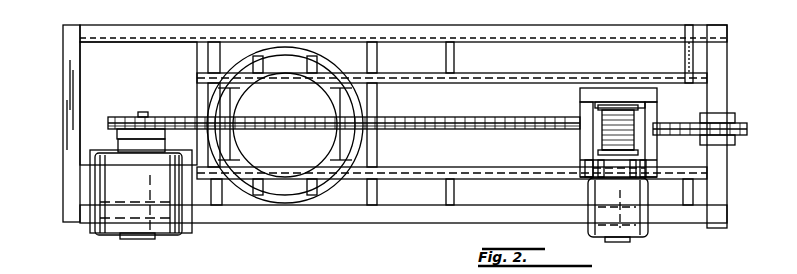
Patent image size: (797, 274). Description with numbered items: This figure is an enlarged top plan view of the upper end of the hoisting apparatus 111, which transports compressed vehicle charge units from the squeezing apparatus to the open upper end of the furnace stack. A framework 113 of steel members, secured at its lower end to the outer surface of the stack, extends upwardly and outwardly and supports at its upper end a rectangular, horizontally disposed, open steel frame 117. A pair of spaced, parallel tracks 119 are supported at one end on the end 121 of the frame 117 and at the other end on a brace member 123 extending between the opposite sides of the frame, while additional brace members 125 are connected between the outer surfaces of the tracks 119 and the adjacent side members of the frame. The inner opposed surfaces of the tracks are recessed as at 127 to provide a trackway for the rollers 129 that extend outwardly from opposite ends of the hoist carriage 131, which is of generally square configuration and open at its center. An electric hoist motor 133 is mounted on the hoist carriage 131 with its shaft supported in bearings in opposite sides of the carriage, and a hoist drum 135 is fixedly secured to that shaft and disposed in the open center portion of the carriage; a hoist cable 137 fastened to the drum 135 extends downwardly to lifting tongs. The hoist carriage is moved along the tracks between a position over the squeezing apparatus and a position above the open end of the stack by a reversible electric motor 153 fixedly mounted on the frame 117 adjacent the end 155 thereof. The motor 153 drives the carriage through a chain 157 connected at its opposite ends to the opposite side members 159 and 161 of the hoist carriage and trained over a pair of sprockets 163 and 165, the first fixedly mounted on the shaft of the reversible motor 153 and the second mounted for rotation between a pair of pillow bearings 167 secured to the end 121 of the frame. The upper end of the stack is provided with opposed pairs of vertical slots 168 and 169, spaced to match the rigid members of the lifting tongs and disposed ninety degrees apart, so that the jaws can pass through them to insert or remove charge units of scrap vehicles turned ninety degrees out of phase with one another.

The hoisting apparatus 111 is at (116, 230).
The framework 113 is at (276, 229).
The frame 117 is at (708, 36).
The tracks 119 is at (510, 68).
The end of the frame 121 is at (722, 60).
The brace member 123 is at (200, 52).
The brace members 125 is at (448, 60).
The recess 127 is at (442, 80).
The rollers 129 is at (650, 88).
The hoist carriage 131 is at (646, 121).
The hoist motor 133 is at (604, 228).
The hoist drum 135 is at (600, 120).
The hoist cable 137 is at (636, 146).
The reversible electric motor 153 is at (165, 230).
The end of the frame 155 is at (67, 57).
The chain 157 is at (418, 125).
The side member of the hoist carriage 159 is at (600, 104).
The side member of the hoist carriage 161 is at (642, 100).
The sprocket 163 is at (160, 117).
The sprocket 165 is at (742, 124).
The pillow bearings 167 is at (716, 104).
The vertical slots 168 is at (333, 97).
The vertical slots 169 is at (314, 62).